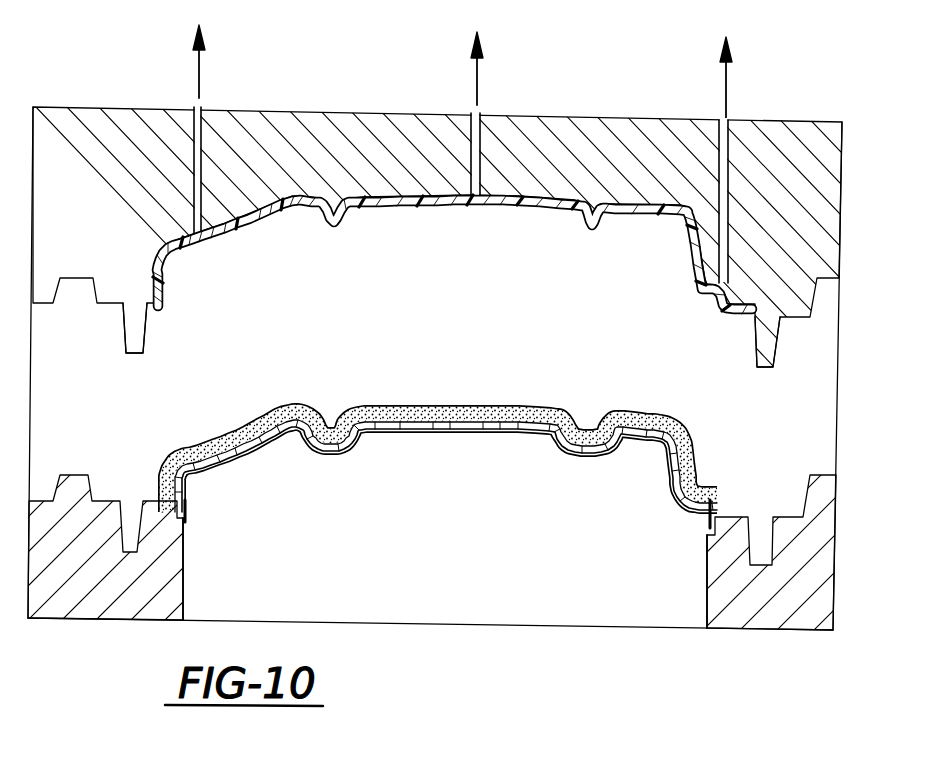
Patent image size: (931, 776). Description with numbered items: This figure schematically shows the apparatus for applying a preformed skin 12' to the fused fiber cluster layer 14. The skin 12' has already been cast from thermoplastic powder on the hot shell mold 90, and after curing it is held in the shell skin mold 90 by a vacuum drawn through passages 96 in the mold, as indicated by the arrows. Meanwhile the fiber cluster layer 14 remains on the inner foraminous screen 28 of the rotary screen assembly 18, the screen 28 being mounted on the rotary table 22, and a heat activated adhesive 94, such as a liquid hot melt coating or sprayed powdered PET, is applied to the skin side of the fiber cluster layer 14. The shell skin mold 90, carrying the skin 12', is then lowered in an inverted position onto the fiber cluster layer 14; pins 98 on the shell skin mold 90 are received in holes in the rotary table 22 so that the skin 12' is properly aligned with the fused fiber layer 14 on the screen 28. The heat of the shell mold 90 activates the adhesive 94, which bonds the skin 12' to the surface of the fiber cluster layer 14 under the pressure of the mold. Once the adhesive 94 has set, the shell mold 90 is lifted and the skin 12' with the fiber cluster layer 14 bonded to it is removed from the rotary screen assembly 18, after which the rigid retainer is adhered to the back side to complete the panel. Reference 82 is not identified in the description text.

The shell mold 90 is at (350, 112).
The passages 96 is at (205, 132).
The pins 98 is at (143, 328).
The skin 12' is at (452, 254).
The heat activated adhesive 94 is at (550, 405).
The inner foraminous screen 28 is at (445, 432).
The fiber cluster layer 14 is at (513, 428).
The lower mold blocks 82 is at (127, 515).
The rotary table 22 is at (185, 589).
The rotary screen assembly 18 is at (692, 585).